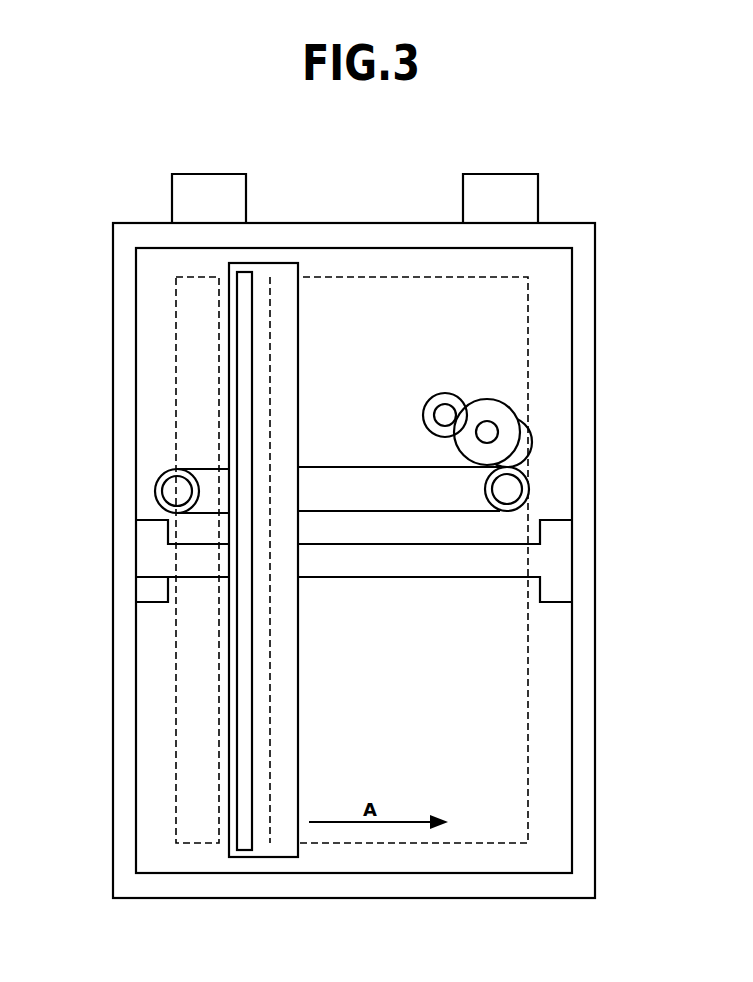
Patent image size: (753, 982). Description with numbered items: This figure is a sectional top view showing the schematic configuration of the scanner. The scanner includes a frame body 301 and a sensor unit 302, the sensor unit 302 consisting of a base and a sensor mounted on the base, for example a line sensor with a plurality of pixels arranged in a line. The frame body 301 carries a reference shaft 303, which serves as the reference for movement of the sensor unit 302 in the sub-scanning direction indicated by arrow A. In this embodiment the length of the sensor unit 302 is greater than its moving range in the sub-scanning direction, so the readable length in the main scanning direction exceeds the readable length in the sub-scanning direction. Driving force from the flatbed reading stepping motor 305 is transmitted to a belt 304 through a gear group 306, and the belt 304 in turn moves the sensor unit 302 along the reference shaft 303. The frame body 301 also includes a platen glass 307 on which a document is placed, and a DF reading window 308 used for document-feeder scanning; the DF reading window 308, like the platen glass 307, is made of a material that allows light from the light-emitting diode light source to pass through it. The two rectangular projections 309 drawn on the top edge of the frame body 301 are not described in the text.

The frame body 301 is at (555, 247).
The sensor unit 302 is at (246, 803).
The reference shaft 303 is at (495, 578).
The belt 304 is at (298, 327).
The flatbed reading stepping motor 305 is at (447, 393).
The gear group 306 is at (458, 393).
The platen glass 307 is at (530, 802).
The DF reading window 308 is at (177, 667).
The tab 309 is at (208, 173).